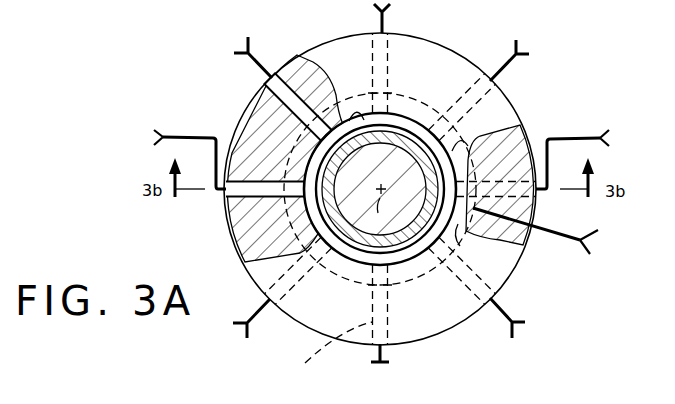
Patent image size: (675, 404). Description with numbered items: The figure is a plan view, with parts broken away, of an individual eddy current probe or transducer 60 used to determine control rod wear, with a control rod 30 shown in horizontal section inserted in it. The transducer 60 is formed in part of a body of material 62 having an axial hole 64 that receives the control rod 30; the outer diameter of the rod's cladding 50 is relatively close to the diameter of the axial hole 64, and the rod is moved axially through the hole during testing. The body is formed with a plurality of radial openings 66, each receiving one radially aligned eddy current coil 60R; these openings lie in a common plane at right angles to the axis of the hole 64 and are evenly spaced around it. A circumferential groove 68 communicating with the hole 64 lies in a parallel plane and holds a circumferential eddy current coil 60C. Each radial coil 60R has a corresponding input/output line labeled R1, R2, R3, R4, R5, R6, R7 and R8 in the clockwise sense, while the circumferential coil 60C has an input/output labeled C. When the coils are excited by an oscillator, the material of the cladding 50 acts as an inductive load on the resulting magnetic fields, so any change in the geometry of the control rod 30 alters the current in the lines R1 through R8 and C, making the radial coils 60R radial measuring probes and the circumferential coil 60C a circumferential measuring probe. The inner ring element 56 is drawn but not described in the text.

The control rod 30 is at (352, 249).
The cladding 50 is at (404, 130).
The inner ring 56 is at (408, 249).
The eddy current probe or transducer 60 is at (455, 52).
The circumferential eddy current coil 60C is at (460, 236).
The radially aligned eddy current coil 60R is at (478, 281).
The body of material 62 is at (508, 95).
The axial hole 64 is at (348, 113).
The radial openings 66 is at (276, 94).
The circumferential groove 68 is at (462, 140).
The input/output line of circumferential coil C is at (590, 254).
The input/output line of radial coil R1 is at (377, 9).
The input/output line of radial coil R2 is at (528, 53).
The input/output line of radial coil R3 is at (608, 134).
The input/output line of radial coil R4 is at (512, 337).
The input/output line of radial coil R5 is at (389, 360).
The input/output line of radial coil R6 is at (233, 325).
The input/output line of radial coil R7 is at (154, 134).
The input/output line of radial coil R8 is at (234, 51).